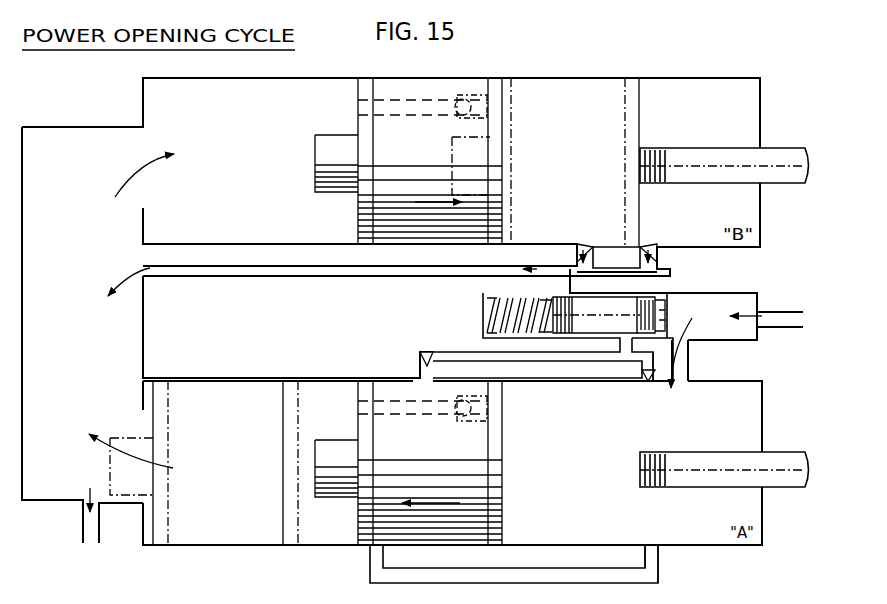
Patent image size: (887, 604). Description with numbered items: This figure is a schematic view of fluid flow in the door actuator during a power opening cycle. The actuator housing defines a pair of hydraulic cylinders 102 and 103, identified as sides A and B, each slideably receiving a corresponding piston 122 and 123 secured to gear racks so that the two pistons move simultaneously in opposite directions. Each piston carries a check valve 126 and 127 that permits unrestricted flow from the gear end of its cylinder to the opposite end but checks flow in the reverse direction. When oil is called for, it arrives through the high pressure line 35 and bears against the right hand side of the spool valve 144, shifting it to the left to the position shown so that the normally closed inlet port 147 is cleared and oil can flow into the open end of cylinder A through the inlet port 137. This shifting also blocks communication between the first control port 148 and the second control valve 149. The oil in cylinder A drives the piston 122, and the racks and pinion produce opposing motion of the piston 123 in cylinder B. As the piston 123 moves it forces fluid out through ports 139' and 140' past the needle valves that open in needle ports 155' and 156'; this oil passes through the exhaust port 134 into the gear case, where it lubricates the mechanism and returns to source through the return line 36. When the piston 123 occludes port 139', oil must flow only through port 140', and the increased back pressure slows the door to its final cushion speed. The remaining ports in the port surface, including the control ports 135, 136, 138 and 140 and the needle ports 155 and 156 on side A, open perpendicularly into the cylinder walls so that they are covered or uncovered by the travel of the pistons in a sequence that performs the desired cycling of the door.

The hydraulic cylinder 103 is at (477, 80).
The hydraulic cylinder 102 is at (690, 548).
The piston 123 is at (390, 83).
The piston 122 is at (366, 545).
The check valve 127 is at (413, 102).
The check valve 126 is at (418, 410).
The exhaust port 134 is at (163, 278).
The control port 138 is at (420, 383).
The needle port 156 is at (429, 338).
The needle port 156' is at (561, 242).
The control port 140 is at (616, 395).
The control port 140' is at (669, 229).
The needle port 155 is at (659, 384).
The needle port 155' is at (645, 248).
The control port 139' is at (610, 231).
The second control valve 149 is at (567, 293).
The spool valve 144 is at (610, 303).
The first control port 148 is at (652, 312).
The inlet port 147 is at (703, 320).
The high pressure line 35 is at (784, 312).
The return line 36 is at (82, 530).
The inlet port 137 is at (717, 305).
The control port 135 is at (375, 559).
The control port 136 is at (652, 546).